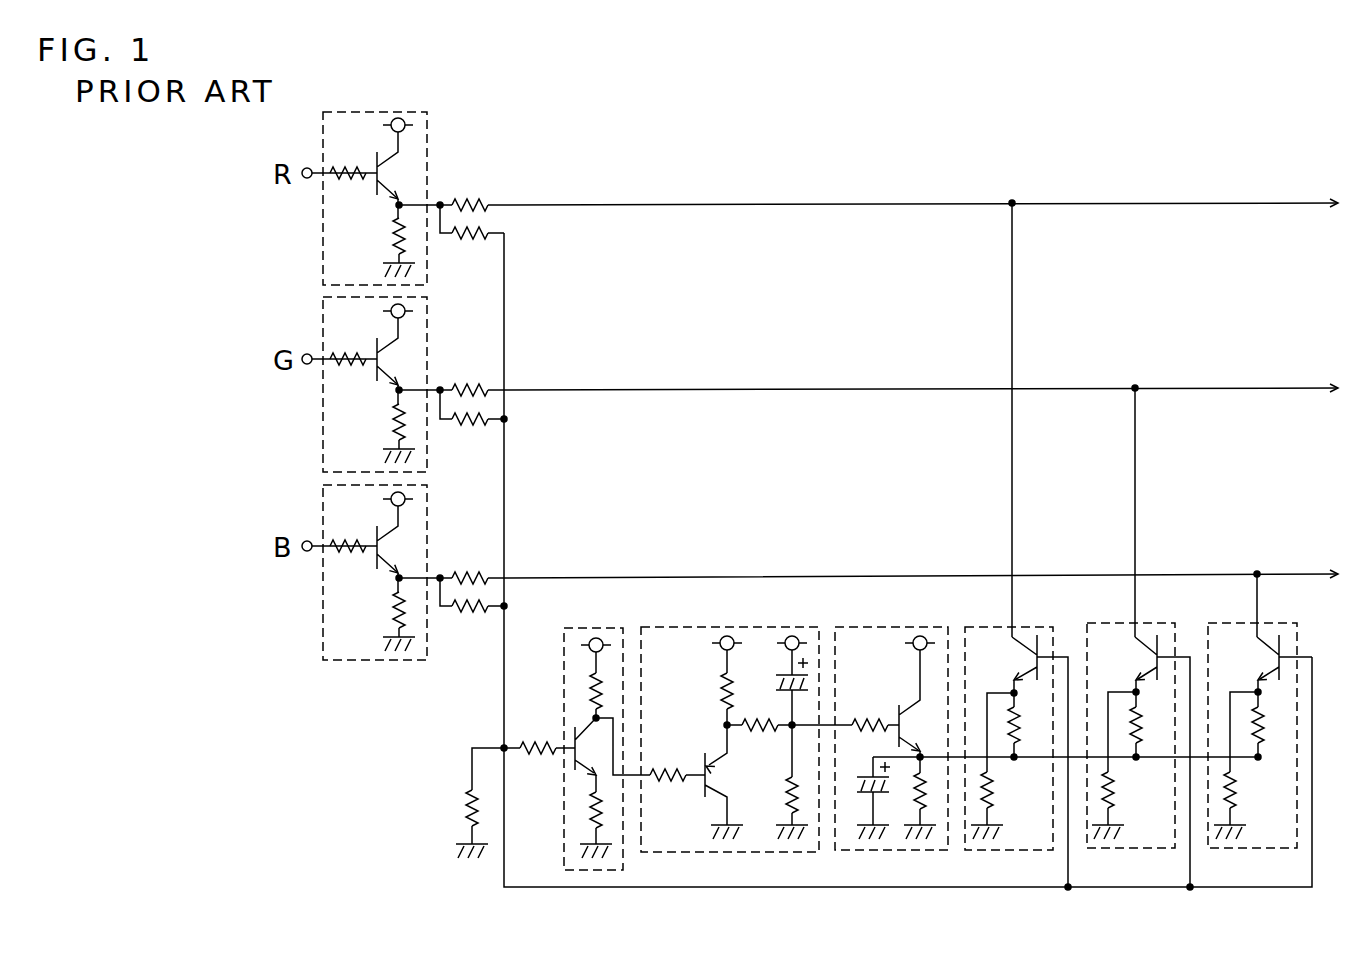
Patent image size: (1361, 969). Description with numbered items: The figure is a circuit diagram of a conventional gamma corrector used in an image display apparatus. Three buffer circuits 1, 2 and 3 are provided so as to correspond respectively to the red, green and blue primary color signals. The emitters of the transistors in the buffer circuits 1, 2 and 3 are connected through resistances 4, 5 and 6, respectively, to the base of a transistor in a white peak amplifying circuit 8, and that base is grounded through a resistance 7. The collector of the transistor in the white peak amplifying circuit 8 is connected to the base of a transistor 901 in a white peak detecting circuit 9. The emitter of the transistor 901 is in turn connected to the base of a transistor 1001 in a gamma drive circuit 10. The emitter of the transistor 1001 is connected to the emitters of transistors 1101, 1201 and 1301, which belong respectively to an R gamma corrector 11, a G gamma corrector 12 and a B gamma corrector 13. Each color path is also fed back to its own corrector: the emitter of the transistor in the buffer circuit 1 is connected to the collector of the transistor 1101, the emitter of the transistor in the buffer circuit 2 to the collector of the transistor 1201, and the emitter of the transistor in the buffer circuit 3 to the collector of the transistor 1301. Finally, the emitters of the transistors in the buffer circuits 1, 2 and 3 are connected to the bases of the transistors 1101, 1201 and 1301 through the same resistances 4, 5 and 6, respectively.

The buffer circuit 1 is at (428, 141).
The buffer circuit 2 is at (428, 329).
The buffer circuit 3 is at (428, 517).
The resistance 4 is at (468, 250).
The resistance 5 is at (468, 437).
The resistance 6 is at (468, 623).
The resistance 7 is at (460, 809).
The white peak amplifying circuit 8 is at (624, 861).
The white peak detecting circuit 9 is at (746, 756).
The gamma drive circuit 10 is at (891, 756).
The R gamma corrector 11 is at (1010, 735).
The G gamma corrector 12 is at (1130, 735).
The B gamma corrector 13 is at (1252, 734).
The transistor 901 is at (708, 765).
The transistor 1001 is at (905, 702).
The transistor 1101 is at (1019, 656).
The transistor 1201 is at (1139, 656).
The transistor 1301 is at (1261, 656).